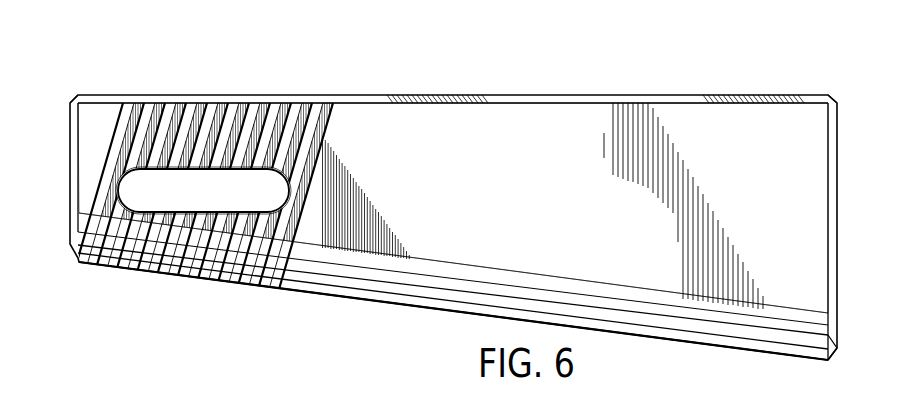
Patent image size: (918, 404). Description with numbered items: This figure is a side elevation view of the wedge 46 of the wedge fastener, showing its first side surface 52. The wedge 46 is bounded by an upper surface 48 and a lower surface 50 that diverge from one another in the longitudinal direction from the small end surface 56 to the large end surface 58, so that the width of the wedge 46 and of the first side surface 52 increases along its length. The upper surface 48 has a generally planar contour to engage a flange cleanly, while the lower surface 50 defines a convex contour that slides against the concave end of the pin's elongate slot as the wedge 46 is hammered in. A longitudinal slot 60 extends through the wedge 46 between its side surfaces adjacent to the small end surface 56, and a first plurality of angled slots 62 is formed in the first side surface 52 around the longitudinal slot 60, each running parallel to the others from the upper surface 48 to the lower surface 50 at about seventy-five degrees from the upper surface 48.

The wedge 46 is at (691, 88).
The upper surface 48 is at (602, 95).
The lower surface 50 is at (370, 298).
The first side surface 52 is at (528, 200).
The small end surface 56 is at (68, 128).
The large end surface 58 is at (838, 130).
The longitudinal slot 60 is at (177, 192).
The first plurality of angled slots 62 is at (228, 98).